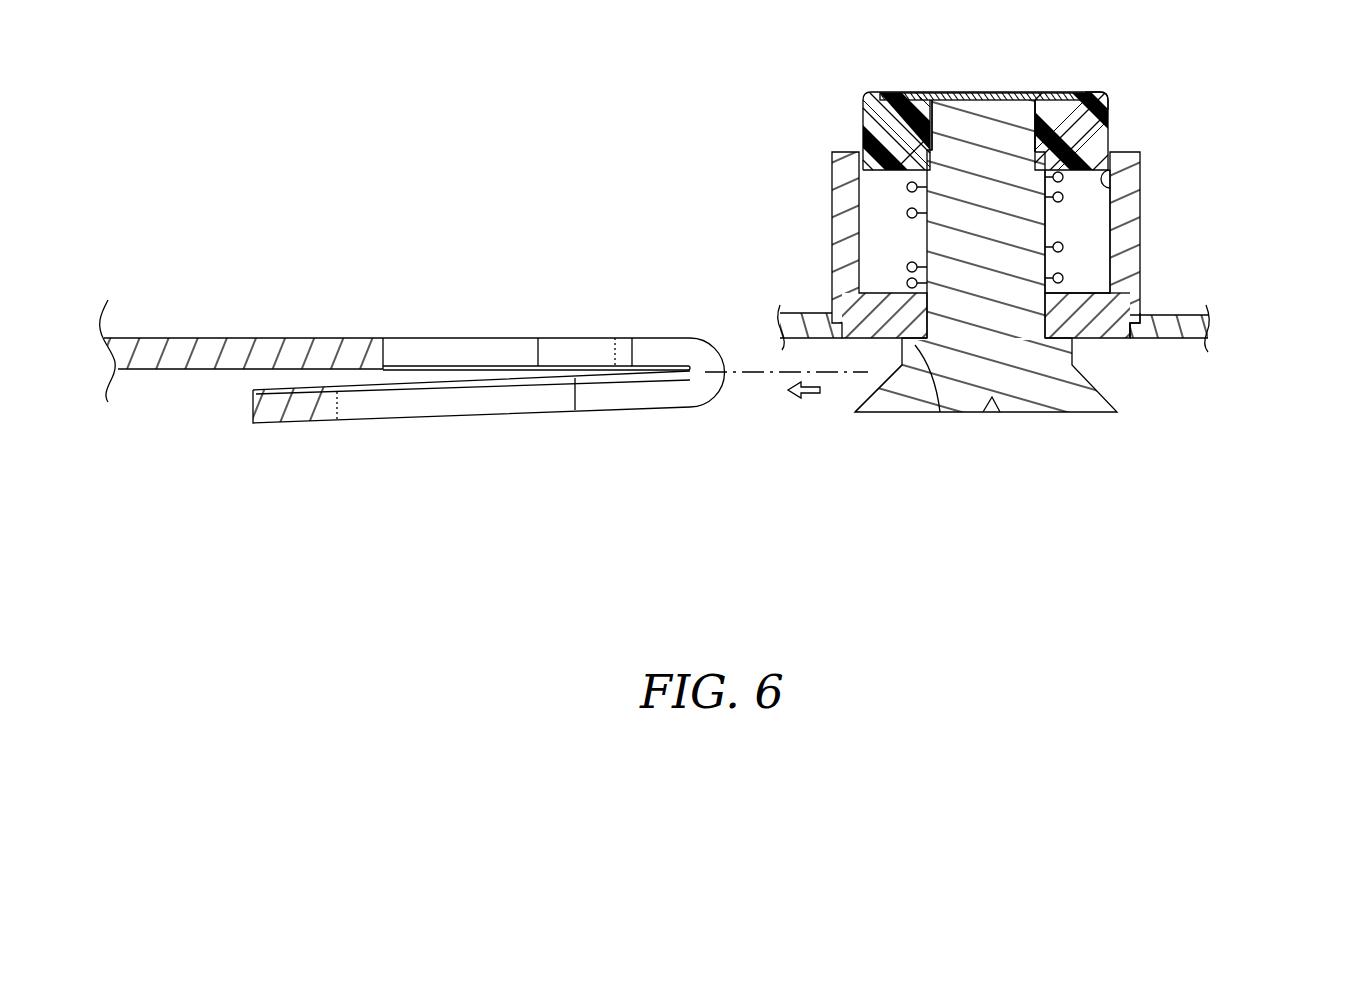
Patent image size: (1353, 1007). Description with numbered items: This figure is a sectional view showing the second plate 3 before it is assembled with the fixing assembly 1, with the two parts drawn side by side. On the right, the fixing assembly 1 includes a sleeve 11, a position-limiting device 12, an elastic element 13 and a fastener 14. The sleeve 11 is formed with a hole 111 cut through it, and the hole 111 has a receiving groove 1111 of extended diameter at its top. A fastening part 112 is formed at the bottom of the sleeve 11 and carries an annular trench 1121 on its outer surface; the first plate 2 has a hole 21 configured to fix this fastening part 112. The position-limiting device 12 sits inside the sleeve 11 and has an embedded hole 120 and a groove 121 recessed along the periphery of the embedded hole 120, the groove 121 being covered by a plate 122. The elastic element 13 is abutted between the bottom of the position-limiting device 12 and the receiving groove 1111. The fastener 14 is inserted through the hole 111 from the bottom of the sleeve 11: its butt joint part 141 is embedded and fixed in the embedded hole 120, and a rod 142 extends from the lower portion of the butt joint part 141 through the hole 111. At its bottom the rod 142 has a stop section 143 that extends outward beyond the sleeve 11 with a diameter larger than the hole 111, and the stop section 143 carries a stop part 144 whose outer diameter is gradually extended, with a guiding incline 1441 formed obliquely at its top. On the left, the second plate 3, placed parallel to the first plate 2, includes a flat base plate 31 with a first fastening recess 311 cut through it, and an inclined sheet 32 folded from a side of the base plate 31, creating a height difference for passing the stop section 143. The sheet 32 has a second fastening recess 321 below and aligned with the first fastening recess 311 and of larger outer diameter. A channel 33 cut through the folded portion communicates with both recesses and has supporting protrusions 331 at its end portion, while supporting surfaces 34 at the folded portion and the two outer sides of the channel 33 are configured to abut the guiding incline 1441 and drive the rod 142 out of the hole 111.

The fixing assembly 1 is at (830, 120).
The sleeve 11 is at (1130, 240).
The hole 111 is at (1092, 212).
The receiving groove 1111 is at (1118, 172).
The fastening part 112 is at (1247, 284).
The annular trench 1121 is at (1115, 317).
The position-limiting device 12 is at (1103, 98).
The embedded hole 120 is at (932, 90).
The groove 121 is at (1047, 100).
The plate 122 is at (1095, 102).
The elastic element 13 is at (1100, 132).
The fastener 14 is at (1069, 425).
The butt joint part 141 is at (935, 140).
The rod 142 is at (1033, 313).
The stop section 143 is at (913, 352).
The stop part 144 is at (878, 400).
The guiding incline 1441 is at (865, 392).
The first plate 2 is at (1168, 330).
The hole 21 is at (1130, 338).
The second plate 3 is at (337, 266).
The base plate 31 is at (343, 348).
The first fastening recess 311 is at (453, 348).
The sheet 32 is at (283, 410).
The second fastening recess 321 is at (378, 405).
The channel 33 is at (642, 348).
The supporting protrusions 331 is at (575, 348).
The supporting surfaces 34 is at (693, 348).